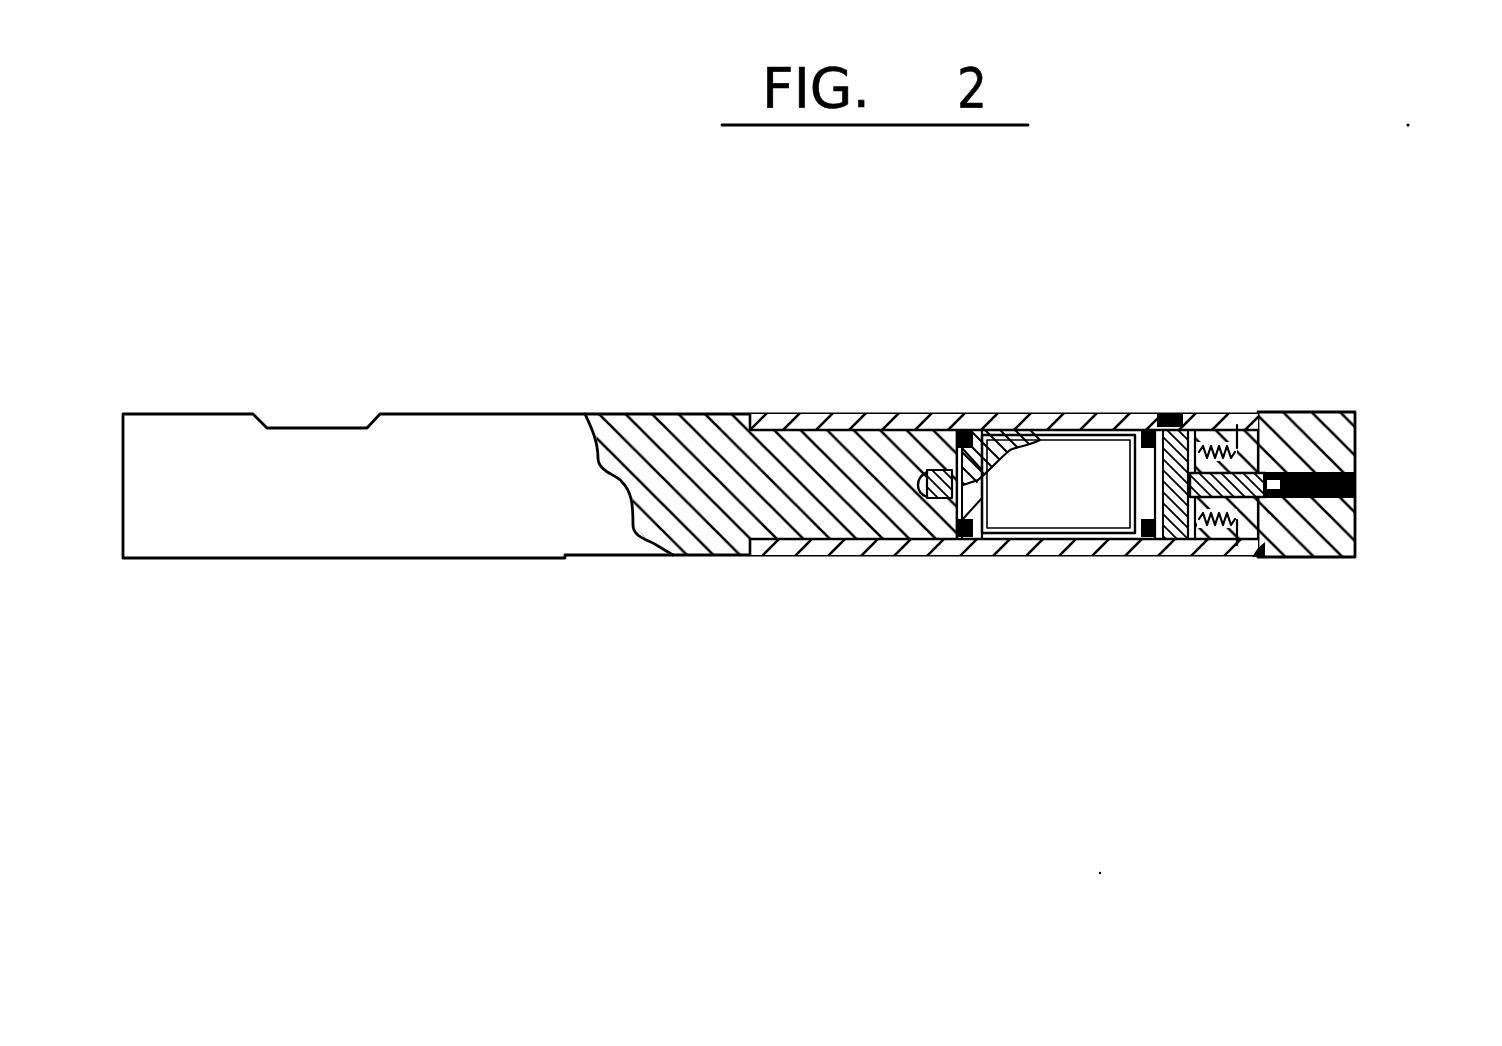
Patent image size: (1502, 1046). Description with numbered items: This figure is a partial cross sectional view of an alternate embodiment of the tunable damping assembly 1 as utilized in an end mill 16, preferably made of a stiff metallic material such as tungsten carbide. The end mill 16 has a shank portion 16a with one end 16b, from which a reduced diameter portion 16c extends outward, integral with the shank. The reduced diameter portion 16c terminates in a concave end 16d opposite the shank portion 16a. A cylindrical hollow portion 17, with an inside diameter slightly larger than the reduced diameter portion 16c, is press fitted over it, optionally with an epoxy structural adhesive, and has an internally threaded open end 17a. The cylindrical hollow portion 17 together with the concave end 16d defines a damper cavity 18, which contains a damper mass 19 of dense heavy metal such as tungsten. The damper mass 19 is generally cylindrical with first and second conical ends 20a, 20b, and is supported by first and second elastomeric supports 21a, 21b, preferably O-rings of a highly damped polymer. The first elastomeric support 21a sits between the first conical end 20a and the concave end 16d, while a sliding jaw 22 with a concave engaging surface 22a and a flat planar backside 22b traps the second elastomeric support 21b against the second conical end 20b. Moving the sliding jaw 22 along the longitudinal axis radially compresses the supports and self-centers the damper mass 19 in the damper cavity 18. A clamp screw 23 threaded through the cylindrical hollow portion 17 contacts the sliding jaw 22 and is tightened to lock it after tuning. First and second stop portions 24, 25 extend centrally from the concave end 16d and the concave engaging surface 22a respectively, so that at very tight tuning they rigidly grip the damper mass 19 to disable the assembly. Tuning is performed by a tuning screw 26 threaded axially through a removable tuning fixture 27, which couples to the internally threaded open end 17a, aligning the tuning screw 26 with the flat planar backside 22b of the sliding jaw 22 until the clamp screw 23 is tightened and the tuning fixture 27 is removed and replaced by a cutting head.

The tunable damping assembly 1 is at (1233, 270).
The end mill 16 is at (451, 222).
The shank portion 16a is at (483, 505).
The one end 16b is at (737, 414).
The reduced diameter portion 16c is at (783, 555).
The concave end 16d is at (947, 414).
The cylindrical hollow portion 17 is at (1072, 578).
The internally threaded open end 17a is at (1263, 557).
The damper cavity 18 is at (1017, 555).
The damper mass 19 is at (1088, 506).
The first conical end 20a is at (990, 555).
The second conical end 20b is at (1140, 505).
The first elastomeric support 21a is at (922, 555).
The second elastomeric support 21b is at (1178, 555).
The sliding jaw 22 is at (1230, 414).
The concave engaging surface 22a is at (1198, 414).
The flat planar backside 22b is at (1210, 555).
The clamp screw 23 is at (1157, 414).
The first stop portion 24 is at (930, 470).
The second stop portion 25 is at (1278, 428).
The tuning screw 26 is at (1317, 497).
The tuning fixture 27 is at (1325, 460).